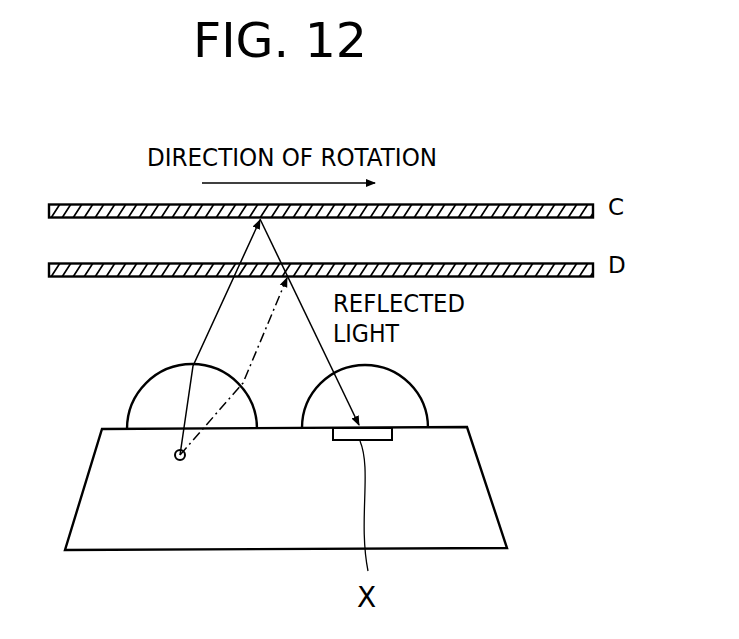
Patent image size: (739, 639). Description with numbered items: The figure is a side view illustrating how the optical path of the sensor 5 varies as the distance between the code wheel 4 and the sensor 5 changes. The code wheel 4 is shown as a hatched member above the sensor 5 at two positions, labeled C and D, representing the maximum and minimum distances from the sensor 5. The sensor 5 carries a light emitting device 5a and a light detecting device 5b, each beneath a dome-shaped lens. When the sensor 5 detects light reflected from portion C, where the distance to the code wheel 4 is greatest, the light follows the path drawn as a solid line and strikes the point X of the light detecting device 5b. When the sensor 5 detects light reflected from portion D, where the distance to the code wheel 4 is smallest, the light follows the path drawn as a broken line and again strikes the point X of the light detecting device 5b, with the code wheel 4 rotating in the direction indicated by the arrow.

The code wheel 4 is at (543, 206).
The sensor 5 is at (487, 481).
The light emitting device 5a is at (175, 455).
The light detecting device 5b is at (378, 428).